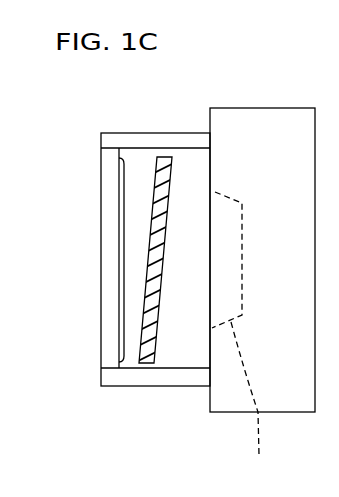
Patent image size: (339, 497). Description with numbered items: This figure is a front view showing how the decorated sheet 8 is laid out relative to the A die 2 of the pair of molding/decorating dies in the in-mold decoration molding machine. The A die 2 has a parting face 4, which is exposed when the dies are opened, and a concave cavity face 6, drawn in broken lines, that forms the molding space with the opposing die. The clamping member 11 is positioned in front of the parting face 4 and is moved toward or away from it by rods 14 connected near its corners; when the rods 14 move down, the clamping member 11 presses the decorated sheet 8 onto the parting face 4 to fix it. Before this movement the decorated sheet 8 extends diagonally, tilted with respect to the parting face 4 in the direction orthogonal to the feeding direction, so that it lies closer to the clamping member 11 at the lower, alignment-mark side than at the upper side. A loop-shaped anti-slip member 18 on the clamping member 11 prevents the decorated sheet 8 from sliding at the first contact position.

The A die 2 is at (289, 414).
The parting face 4 is at (210, 117).
The concave cavity face 6 is at (238, 334).
The decorated sheet 8 is at (161, 289).
The clamping member 11 is at (99, 352).
The rods 14 is at (144, 138).
The loop-shaped anti-slip member 18 is at (122, 361).